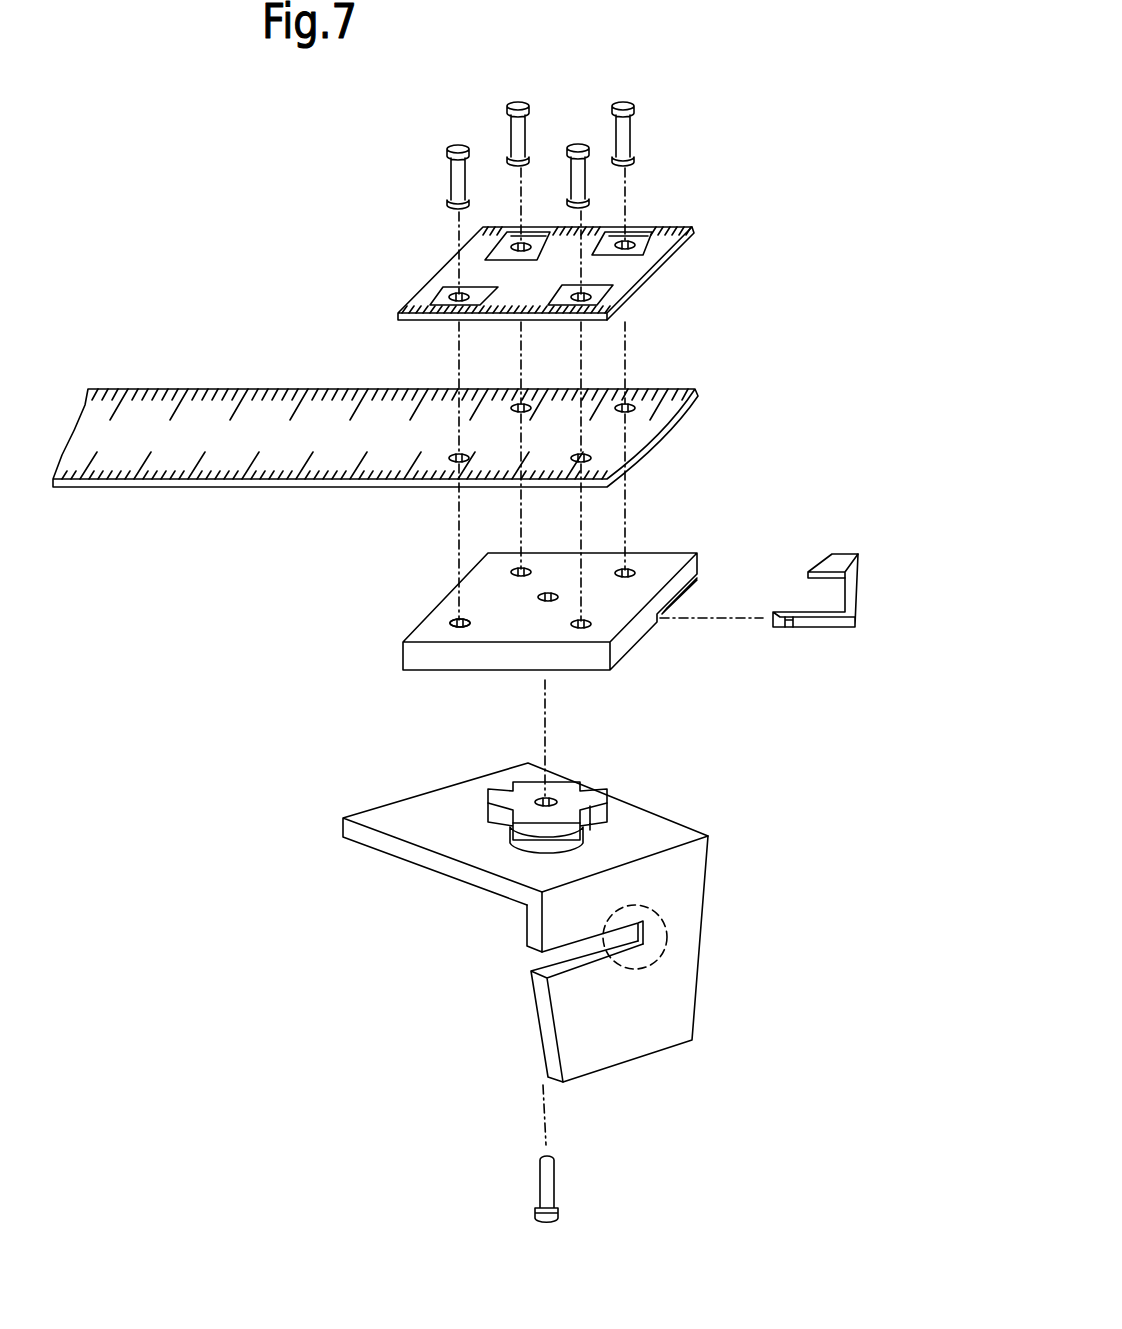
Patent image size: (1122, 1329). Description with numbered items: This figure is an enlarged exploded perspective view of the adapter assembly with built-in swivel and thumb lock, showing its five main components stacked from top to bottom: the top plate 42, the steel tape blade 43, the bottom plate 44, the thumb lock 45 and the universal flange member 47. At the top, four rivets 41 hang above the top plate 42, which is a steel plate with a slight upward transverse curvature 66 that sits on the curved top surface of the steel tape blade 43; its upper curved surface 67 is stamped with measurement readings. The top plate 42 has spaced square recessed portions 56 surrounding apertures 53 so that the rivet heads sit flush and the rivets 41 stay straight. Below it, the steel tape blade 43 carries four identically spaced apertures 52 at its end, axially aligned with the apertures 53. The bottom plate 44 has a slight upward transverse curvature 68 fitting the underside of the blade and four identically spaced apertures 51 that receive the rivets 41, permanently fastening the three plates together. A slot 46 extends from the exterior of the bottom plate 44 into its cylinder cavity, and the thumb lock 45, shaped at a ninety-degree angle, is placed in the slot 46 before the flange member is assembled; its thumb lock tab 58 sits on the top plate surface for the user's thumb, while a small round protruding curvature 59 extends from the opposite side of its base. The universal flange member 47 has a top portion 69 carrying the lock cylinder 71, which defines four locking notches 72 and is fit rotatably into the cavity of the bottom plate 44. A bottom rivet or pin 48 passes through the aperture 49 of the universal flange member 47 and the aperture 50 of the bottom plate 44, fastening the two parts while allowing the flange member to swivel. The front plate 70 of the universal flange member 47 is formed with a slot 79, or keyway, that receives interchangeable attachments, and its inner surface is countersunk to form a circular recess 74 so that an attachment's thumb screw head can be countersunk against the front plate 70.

The rivets 41 is at (627, 124).
The top plate 42 is at (662, 258).
The steel tape blade 43 is at (643, 435).
The bottom plate 44 is at (660, 565).
The thumb lock 45 is at (856, 598).
The slot 46 is at (698, 583).
The universal flange member 47 is at (734, 852).
The bottom rivet or pin 48 is at (547, 1187).
The aperture 49 is at (547, 801).
The aperture 50 is at (546, 597).
The apertures 51 is at (460, 621).
The apertures 52 is at (458, 457).
The apertures 53 is at (443, 290).
The recessed portions 56 is at (505, 228).
The thumb lock tab 58 is at (858, 554).
The round protruding curvature 59 is at (800, 627).
The upward transverse curvature 66 is at (658, 282).
The upper curved surface 67 is at (666, 230).
The upward transverse curvature 68 is at (463, 622).
The top portion 69 is at (647, 833).
The front plate 70 is at (633, 1010).
The lock cylinder 71 is at (519, 782).
The locking notches 72 is at (510, 822).
The circular recess 74 is at (668, 930).
The slot 79 is at (543, 957).